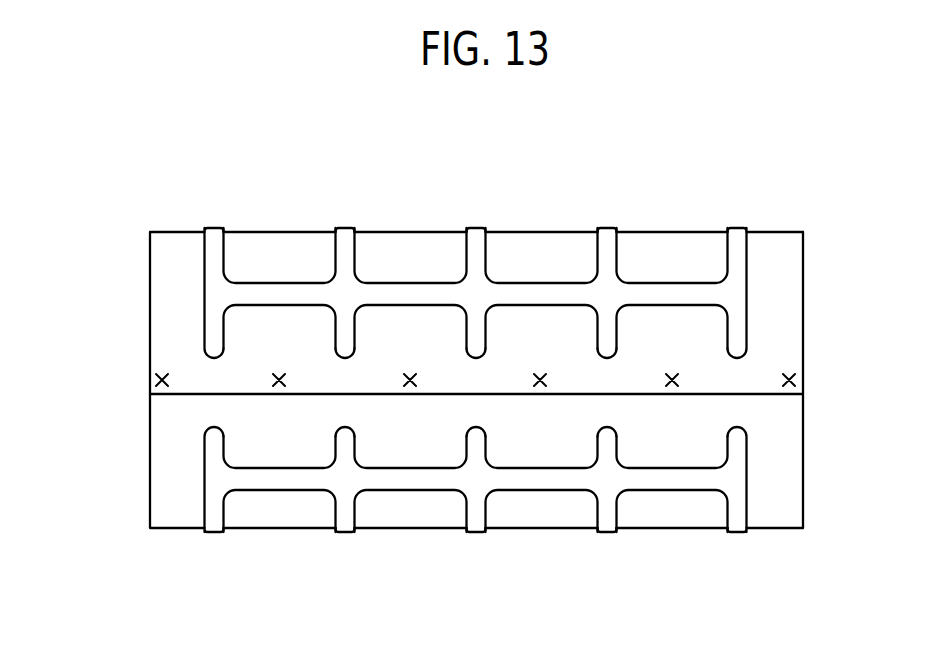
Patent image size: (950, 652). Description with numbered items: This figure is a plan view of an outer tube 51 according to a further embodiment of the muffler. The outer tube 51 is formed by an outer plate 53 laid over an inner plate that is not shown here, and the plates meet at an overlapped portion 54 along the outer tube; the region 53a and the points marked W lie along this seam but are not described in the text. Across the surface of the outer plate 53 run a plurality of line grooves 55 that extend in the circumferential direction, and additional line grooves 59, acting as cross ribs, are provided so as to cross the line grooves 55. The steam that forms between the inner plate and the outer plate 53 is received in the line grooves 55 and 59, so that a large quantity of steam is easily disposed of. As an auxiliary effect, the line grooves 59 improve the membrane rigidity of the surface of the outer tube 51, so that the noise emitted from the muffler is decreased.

The outer tube 51 is at (281, 215).
The outer plate 53 is at (774, 285).
The center line of plate 53a is at (188, 380).
The weld point W is at (160, 390).
The overlapped portion 54 is at (808, 375).
The line groove 55 is at (477, 240).
The line groove 59 is at (550, 295).